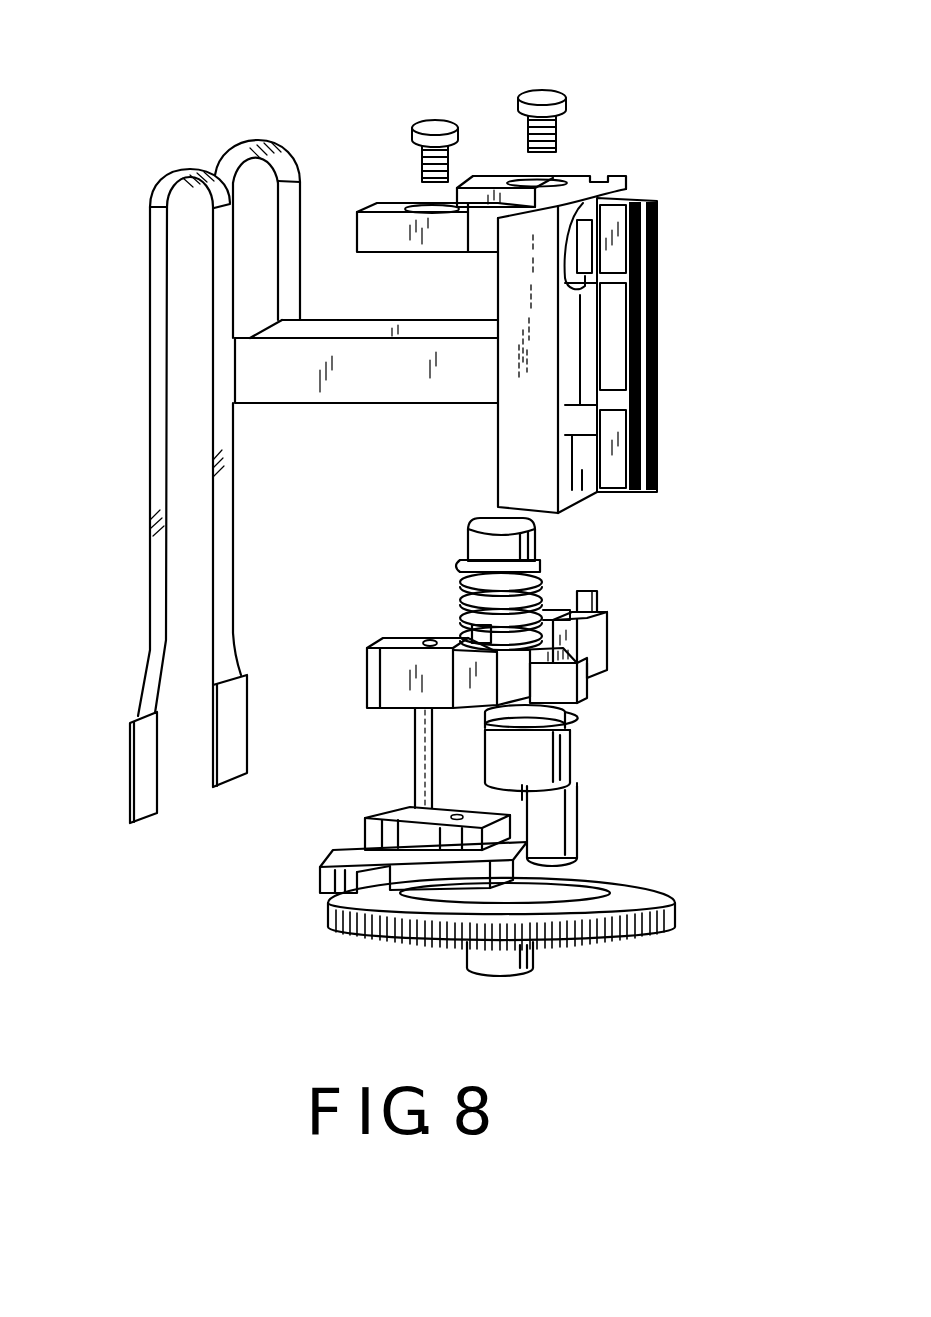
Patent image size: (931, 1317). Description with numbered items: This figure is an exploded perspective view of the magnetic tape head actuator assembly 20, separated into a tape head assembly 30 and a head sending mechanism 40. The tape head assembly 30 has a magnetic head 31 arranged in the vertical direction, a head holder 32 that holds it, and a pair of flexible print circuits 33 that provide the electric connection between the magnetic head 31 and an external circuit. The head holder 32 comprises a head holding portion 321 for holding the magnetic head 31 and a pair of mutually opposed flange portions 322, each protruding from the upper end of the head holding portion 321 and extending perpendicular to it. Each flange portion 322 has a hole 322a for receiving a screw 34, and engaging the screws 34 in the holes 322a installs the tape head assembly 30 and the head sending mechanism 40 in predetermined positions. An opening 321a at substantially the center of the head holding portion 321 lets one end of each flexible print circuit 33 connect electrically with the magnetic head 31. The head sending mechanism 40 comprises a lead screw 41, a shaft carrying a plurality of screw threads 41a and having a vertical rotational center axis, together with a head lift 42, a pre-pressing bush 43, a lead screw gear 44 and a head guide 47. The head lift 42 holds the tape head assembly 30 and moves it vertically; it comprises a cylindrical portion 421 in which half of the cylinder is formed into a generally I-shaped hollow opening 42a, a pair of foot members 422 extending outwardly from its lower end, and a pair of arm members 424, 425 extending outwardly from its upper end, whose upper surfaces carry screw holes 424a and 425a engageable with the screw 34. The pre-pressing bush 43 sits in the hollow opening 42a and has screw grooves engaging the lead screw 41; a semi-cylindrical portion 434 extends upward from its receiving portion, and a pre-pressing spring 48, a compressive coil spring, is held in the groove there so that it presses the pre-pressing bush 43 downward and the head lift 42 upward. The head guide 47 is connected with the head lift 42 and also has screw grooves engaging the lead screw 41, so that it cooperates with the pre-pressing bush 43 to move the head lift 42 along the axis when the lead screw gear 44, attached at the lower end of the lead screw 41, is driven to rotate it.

The magnetic tape head actuator assembly 20 is at (156, 890).
The tape head assembly 30 is at (697, 270).
The magnetic head 31 is at (660, 338).
The head holder 32 is at (512, 458).
The flexible print circuits 33 is at (260, 140).
The screw 34 is at (432, 118).
The head sending mechanism 40 is at (693, 878).
The lead screw 41 is at (548, 605).
The screw threads 41a is at (458, 584).
The head lift 42 is at (603, 648).
The hollow opening 42a is at (574, 794).
The pre-pressing bush 43 is at (574, 778).
The lead screw gear 44 is at (660, 930).
The head guide 47 is at (357, 857).
The pre-pressing spring 48 is at (562, 716).
The head holding portion 321 is at (512, 292).
The opening 321a is at (607, 200).
The flange portions 322 is at (497, 185).
The hole 322a is at (410, 207).
The cylindrical portion 421 is at (437, 744).
The foot members 422 is at (398, 812).
The arm member 424 is at (395, 672).
The screw hole 424a is at (437, 645).
The arm member 425 is at (573, 614).
The screw hole 425a is at (550, 610).
The semi-cylindrical portion 434 is at (574, 742).